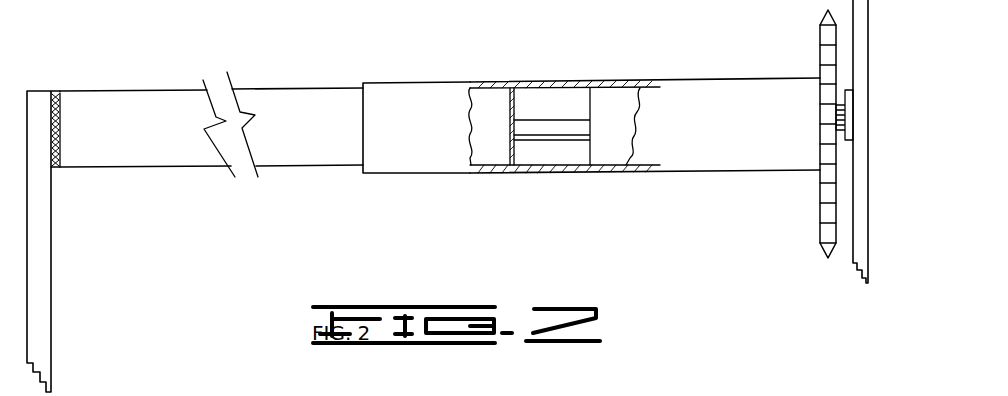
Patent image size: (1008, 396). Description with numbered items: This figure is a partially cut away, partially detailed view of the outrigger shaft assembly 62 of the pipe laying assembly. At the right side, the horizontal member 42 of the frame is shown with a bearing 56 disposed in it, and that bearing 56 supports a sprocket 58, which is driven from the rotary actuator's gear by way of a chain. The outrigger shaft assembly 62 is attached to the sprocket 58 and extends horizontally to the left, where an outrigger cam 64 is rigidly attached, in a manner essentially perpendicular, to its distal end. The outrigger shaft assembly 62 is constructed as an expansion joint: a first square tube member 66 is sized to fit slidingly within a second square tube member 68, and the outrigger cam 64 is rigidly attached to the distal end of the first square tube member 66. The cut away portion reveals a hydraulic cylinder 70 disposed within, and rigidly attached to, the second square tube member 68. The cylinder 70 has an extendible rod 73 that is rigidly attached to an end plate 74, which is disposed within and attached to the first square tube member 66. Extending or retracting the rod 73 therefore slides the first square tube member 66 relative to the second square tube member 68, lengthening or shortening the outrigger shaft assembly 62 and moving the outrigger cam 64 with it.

The horizontal member 42 is at (860, 50).
The bearing 56 is at (852, 103).
The sprocket 58 is at (826, 50).
The outrigger shaft assembly 62 is at (310, 166).
The outrigger cam 64 is at (40, 232).
The first square tube member 66 is at (279, 97).
The second square tube member 68 is at (395, 88).
The hydraulic cylinder 70 is at (608, 95).
The extendible rod 73 is at (548, 128).
The end plate 74 is at (517, 108).